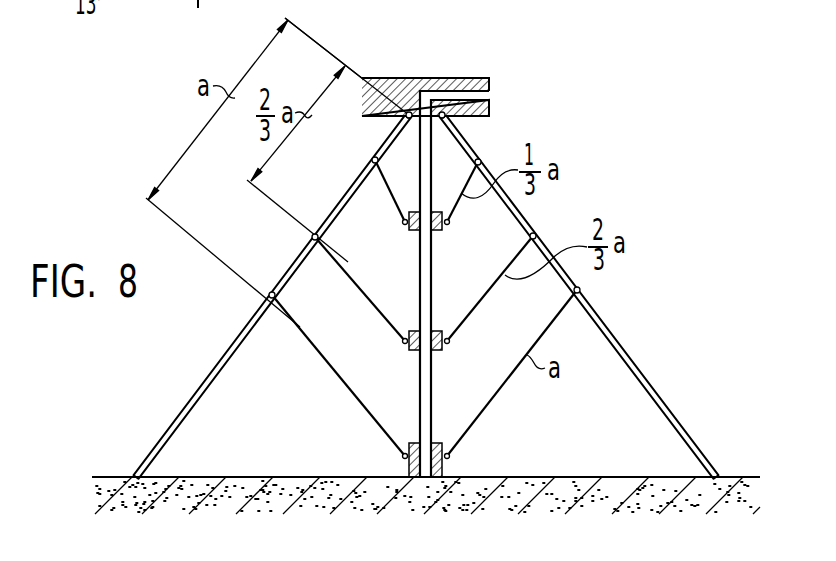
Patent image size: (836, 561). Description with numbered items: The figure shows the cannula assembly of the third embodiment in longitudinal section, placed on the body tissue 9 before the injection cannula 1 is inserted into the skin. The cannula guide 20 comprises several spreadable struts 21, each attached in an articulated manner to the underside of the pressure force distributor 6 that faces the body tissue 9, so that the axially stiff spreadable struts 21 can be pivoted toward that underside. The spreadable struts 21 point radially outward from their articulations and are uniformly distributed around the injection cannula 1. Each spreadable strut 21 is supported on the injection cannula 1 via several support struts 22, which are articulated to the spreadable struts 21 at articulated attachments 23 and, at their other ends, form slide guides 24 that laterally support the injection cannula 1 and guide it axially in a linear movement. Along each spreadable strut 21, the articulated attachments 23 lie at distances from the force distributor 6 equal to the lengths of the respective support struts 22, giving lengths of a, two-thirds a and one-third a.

The injection cannula 1 is at (419, 400).
The pressure force distributor 6 is at (448, 78).
The body tissue 9 is at (528, 496).
The cannula guide 20 is at (196, 362).
The spreadable struts 21 is at (657, 392).
The support struts 22 is at (478, 415).
The articulated attachments 23 is at (268, 296).
The slide guides 24 is at (407, 350).